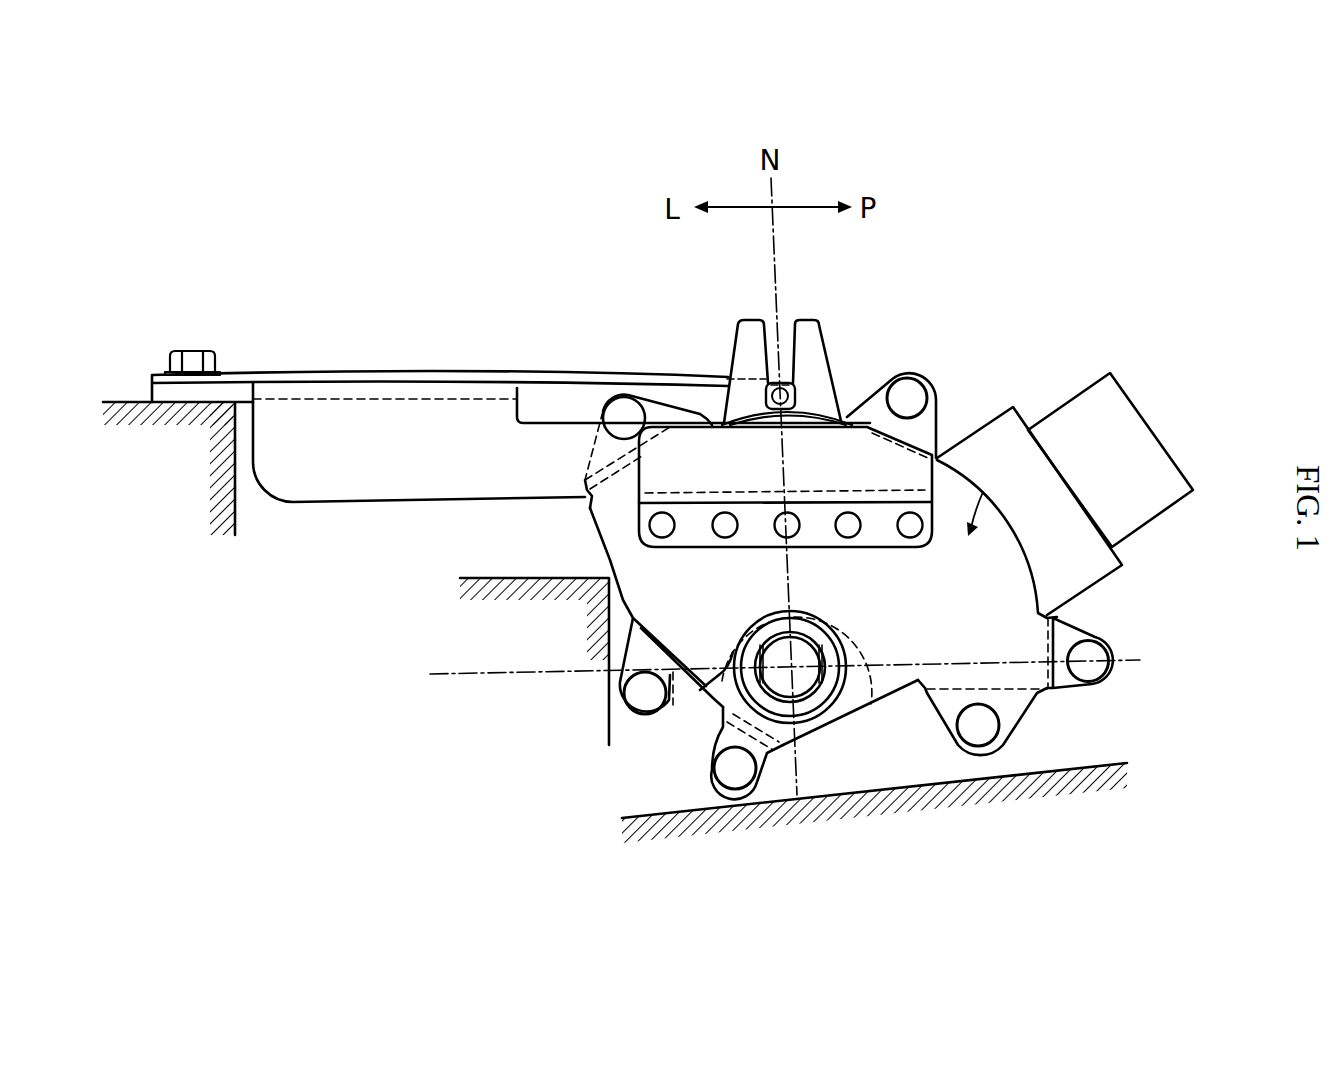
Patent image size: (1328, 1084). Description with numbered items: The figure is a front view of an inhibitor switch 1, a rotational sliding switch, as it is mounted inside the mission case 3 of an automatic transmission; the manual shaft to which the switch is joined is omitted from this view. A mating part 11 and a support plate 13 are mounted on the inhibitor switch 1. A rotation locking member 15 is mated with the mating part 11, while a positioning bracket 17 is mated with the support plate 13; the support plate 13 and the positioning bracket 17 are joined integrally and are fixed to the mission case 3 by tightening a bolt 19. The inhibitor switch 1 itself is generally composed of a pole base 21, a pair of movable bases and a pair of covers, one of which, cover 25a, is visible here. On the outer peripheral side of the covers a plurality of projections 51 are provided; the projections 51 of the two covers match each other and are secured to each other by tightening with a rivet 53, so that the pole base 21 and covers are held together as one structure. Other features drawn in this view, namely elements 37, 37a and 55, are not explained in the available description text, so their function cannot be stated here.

The inhibitor switch 1 is at (967, 364).
The mission case 3 is at (108, 402).
The mating part 11 is at (736, 356).
The support plate 13 is at (662, 481).
The rotation locking member 15 is at (538, 360).
The positioning bracket 17 is at (370, 508).
The bolt 19 is at (190, 350).
The pole base 21 is at (993, 416).
The cover 25a is at (1034, 426).
The output shaft 37 is at (857, 690).
The shaft bore 37a is at (810, 697).
The projection 51 is at (650, 403).
The rivet 53 is at (907, 392).
The pivot bushing 55 is at (623, 412).